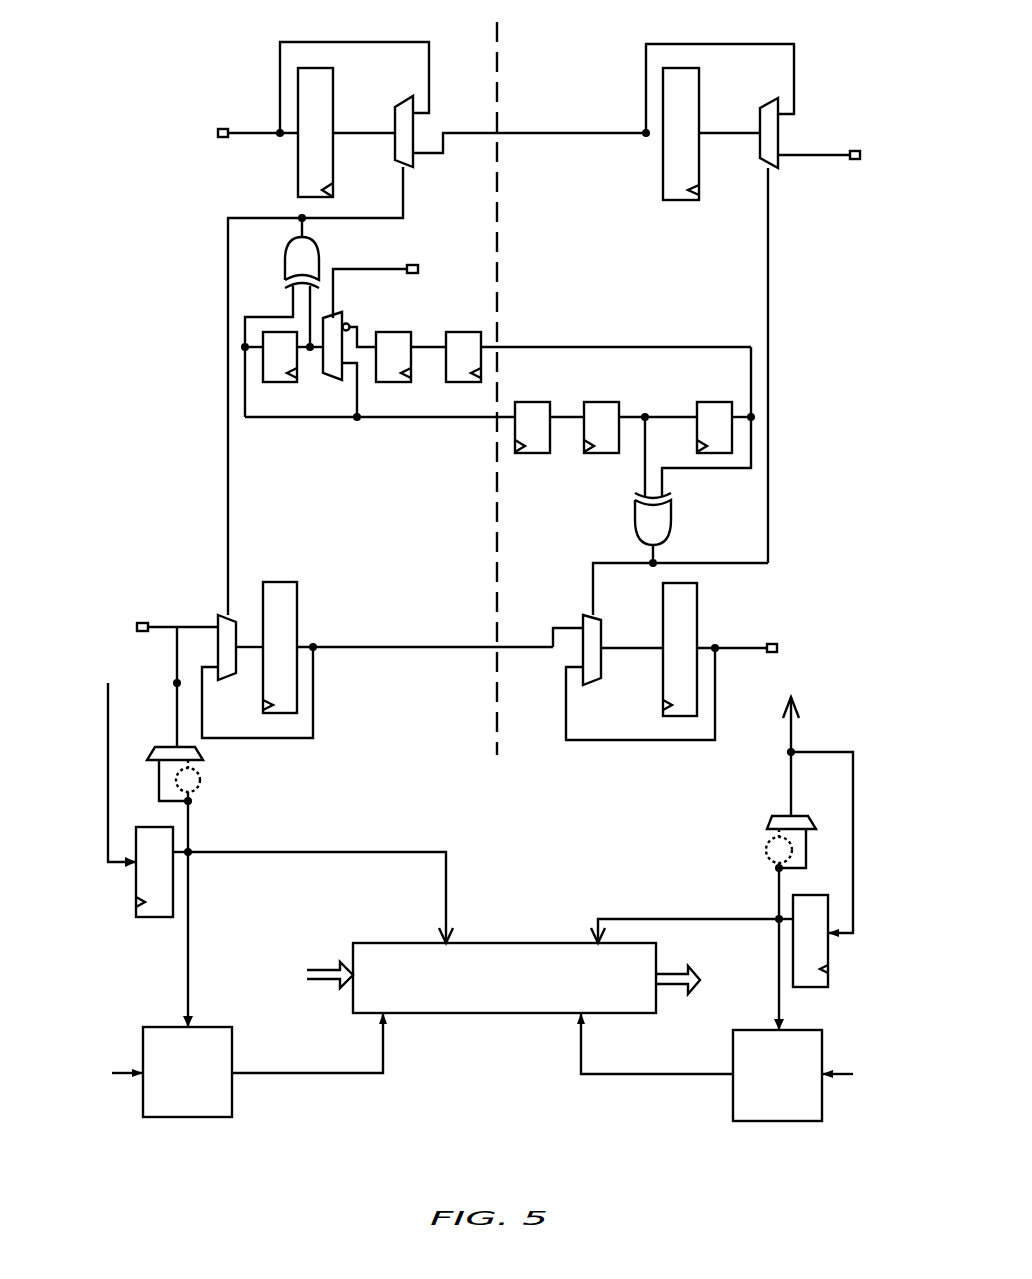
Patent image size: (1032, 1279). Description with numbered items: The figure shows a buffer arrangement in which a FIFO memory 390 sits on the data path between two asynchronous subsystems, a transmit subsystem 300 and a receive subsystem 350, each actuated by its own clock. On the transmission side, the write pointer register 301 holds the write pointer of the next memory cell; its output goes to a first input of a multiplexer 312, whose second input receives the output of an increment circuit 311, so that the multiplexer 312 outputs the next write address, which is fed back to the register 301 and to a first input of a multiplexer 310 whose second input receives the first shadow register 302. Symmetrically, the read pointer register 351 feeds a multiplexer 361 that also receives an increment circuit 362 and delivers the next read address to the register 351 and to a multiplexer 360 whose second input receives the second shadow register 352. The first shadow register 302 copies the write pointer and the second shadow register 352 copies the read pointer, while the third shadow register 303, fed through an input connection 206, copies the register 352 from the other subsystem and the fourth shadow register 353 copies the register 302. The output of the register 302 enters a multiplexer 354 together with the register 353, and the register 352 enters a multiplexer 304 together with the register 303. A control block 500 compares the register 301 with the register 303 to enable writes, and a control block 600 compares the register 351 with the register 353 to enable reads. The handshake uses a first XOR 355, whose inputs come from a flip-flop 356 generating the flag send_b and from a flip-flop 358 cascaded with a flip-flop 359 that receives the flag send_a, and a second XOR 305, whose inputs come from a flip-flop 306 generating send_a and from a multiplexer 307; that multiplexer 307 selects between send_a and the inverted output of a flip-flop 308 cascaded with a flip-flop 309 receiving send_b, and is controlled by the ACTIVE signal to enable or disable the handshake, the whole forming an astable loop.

The ptrb_shd2 input 206 is at (218, 133).
The transmit subsystem 300 is at (256, 44).
The receive subsystem 350 is at (876, 41).
The write pointer register 301 is at (133, 883).
The first shadow register 302 is at (285, 582).
The third shadow register 303 is at (327, 187).
The multiplexer 304 is at (407, 98).
The second XOR 305 is at (285, 254).
The flip-flop 306 is at (285, 382).
The multiplexer 307 is at (333, 316).
The flip-flop 308 is at (387, 330).
The flip-flop 309 is at (460, 330).
The multiplexer 310 is at (222, 680).
The increment circuit 311 is at (202, 773).
The multiplexer 312 is at (168, 747).
The read pointer register 351 is at (828, 952).
The second shadow register 352 is at (670, 200).
The fourth shadow register 353 is at (663, 625).
The multiplexer 354 is at (590, 680).
The first XOR 355 is at (673, 508).
The flip-flop 356 is at (728, 380).
The flip-flop 358 is at (617, 457).
The flip-flop 359 is at (520, 400).
The multiplexer 360 is at (763, 160).
The multiplexer 361 is at (772, 816).
The increment circuit 362 is at (766, 848).
The FIFO memory 390 is at (658, 1015).
The control block 500 is at (195, 1117).
The control block 600 is at (783, 1121).